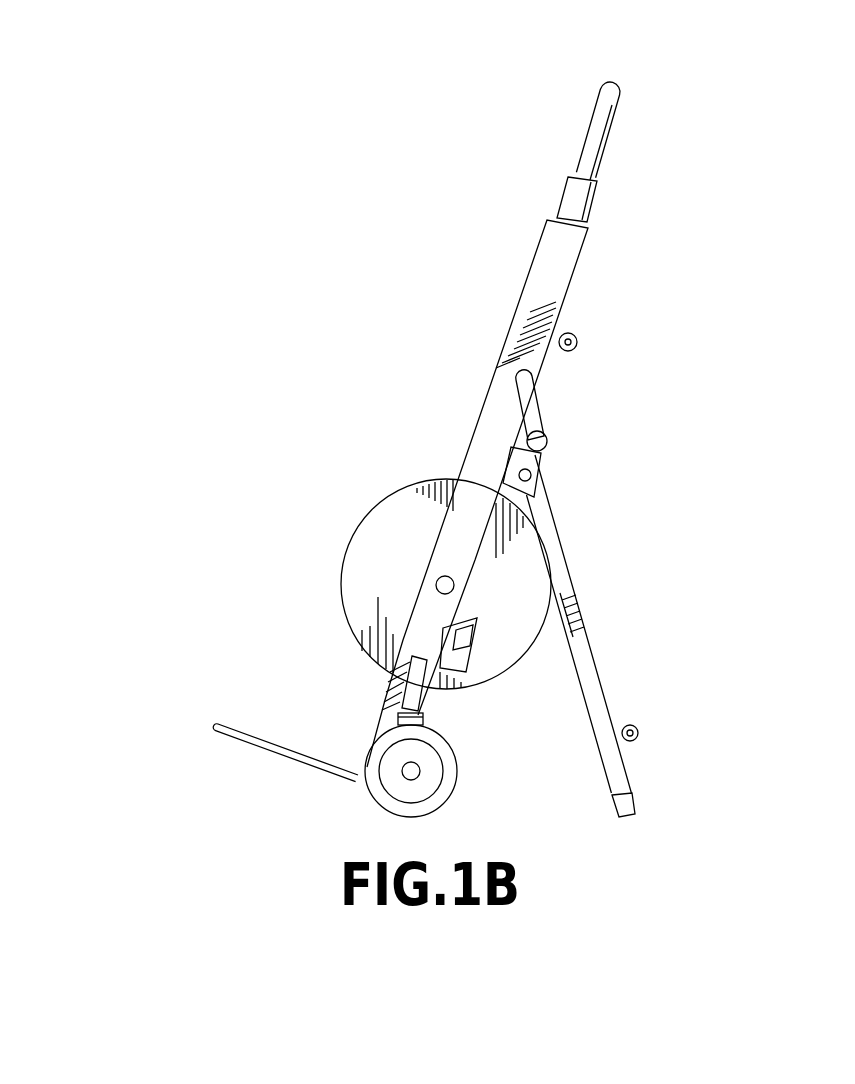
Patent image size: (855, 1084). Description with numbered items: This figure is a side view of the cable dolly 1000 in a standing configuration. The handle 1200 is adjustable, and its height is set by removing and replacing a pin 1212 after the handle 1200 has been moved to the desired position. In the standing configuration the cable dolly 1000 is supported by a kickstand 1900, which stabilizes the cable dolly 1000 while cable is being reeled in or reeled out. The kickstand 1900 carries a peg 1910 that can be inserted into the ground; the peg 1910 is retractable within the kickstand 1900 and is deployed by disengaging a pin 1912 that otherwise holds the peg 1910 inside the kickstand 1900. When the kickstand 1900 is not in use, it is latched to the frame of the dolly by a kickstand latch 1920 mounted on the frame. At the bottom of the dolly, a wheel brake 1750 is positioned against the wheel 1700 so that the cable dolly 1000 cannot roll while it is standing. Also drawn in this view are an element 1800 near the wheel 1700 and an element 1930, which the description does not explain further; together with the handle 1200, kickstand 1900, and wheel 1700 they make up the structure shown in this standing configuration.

The cable dolly 1000 is at (268, 143).
The handle 1200 is at (618, 106).
The pin 1212 is at (580, 342).
The wheel 1700 is at (408, 773).
The wheel brake 1750 is at (407, 712).
The foot bar 1800 is at (247, 738).
The kickstand 1900 is at (622, 778).
The peg 1910 is at (626, 814).
The pin 1912 is at (578, 269).
The kickstand latch 1920 is at (458, 653).
The leg member 1930 is at (854, 953).